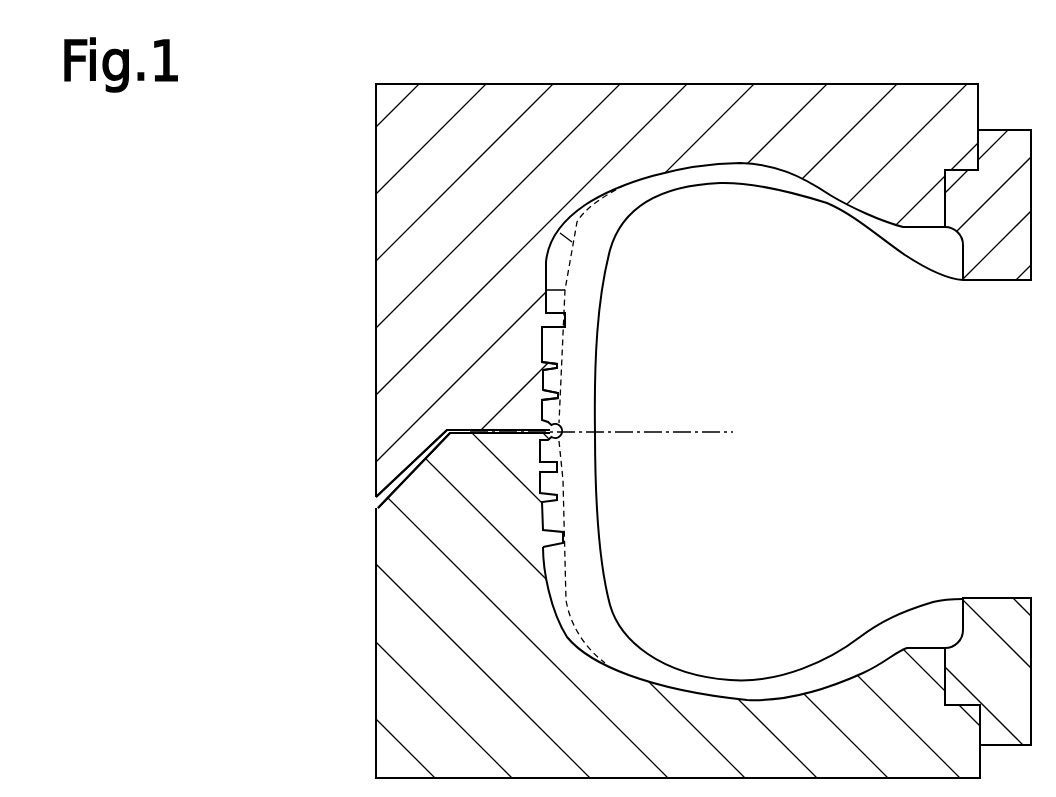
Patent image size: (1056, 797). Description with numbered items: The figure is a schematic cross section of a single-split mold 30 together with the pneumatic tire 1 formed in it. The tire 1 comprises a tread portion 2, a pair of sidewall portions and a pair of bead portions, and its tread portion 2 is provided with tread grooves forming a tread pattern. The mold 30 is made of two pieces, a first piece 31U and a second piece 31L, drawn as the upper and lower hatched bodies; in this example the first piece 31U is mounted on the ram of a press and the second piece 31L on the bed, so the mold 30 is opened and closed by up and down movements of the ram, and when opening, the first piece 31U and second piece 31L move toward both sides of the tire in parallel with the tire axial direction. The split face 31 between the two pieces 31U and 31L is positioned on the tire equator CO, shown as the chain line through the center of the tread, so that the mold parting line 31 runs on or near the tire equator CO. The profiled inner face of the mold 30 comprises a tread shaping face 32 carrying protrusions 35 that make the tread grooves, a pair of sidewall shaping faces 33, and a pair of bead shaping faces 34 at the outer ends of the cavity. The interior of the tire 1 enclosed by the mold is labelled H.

The pneumatic tire 1 is at (905, 257).
The tread portion 2 is at (582, 466).
The single-split mold 30 is at (366, 247).
The mold parting line 31 is at (483, 430).
The first piece 31U is at (387, 401).
The second piece 31L is at (383, 522).
The tread shaping face 32 is at (547, 558).
The sidewall shaping face 33 is at (695, 695).
The bead shaping face 34 is at (927, 646).
The protrusion 35 is at (547, 392).
The tire cavity H is at (735, 277).
The tire equator CO is at (667, 432).